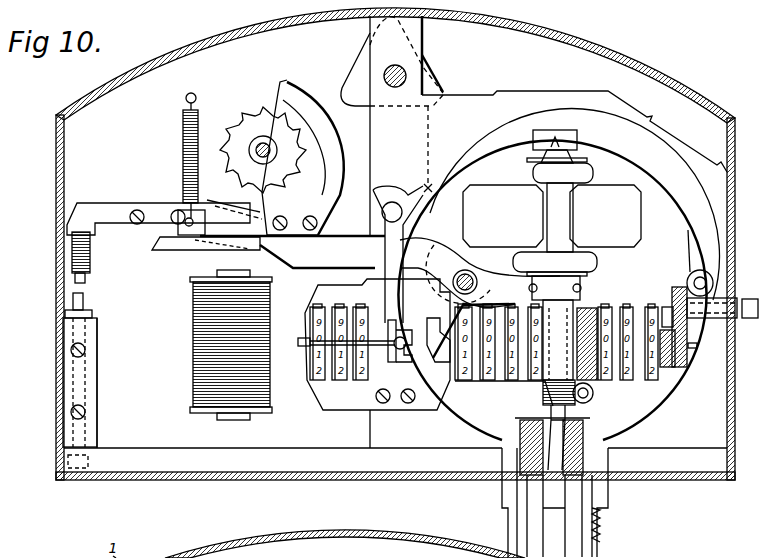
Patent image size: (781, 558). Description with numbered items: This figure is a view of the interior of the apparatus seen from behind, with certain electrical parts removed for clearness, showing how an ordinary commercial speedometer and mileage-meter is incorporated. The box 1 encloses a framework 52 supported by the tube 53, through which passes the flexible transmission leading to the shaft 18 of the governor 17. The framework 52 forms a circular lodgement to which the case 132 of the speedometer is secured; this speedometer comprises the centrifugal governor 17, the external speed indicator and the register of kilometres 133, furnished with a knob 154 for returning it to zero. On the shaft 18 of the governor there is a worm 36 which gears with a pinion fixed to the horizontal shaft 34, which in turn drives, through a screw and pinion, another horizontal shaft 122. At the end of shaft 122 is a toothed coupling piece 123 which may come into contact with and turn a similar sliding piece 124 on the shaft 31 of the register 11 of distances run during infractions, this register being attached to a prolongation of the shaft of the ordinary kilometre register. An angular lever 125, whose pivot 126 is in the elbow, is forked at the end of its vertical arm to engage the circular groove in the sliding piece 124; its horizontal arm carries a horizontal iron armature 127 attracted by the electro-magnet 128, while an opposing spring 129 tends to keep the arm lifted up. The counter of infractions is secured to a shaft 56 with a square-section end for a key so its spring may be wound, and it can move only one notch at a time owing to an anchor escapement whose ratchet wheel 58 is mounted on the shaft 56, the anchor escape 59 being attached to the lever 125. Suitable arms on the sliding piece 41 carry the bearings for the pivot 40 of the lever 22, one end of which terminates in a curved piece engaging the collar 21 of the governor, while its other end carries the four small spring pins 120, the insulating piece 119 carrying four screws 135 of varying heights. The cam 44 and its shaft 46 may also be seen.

The box 1 is at (697, 90).
The framework 52 is at (521, 92).
The shaft of the cam 46 is at (406, 70).
The cam 44 is at (433, 86).
The sliding piece 41 is at (415, 132).
The anchor escape 59 is at (298, 93).
The ratchet wheel 58 is at (256, 118).
The shaft 56 is at (256, 145).
The opposing spring 129 is at (183, 157).
The lever 22 is at (106, 204).
The small spring pins 120 is at (88, 278).
The screws 135 is at (90, 303).
The insulating piece 119 is at (94, 366).
The electro-magnet 128 is at (196, 318).
The angular lever 125 is at (198, 237).
The iron armature 127 is at (212, 253).
The pivot 126 is at (392, 198).
The case of the speedometer 132 is at (665, 401).
The centrifugal governor 17 is at (552, 216).
The collar 21 is at (592, 266).
The pivot 40 is at (470, 278).
The toothed coupling piece 123 is at (432, 318).
The register of distances run during infractions 11 is at (325, 380).
The shaft 31 is at (304, 340).
The sliding piece 124 is at (400, 362).
The register of kilometres 133 is at (490, 384).
The worm 36 is at (541, 392).
The horizontal shaft 34 is at (593, 394).
The horizontal shaft 122 is at (694, 348).
The knob 154 is at (750, 318).
The tube 53 is at (508, 497).
The shaft of the governor 18 is at (560, 533).